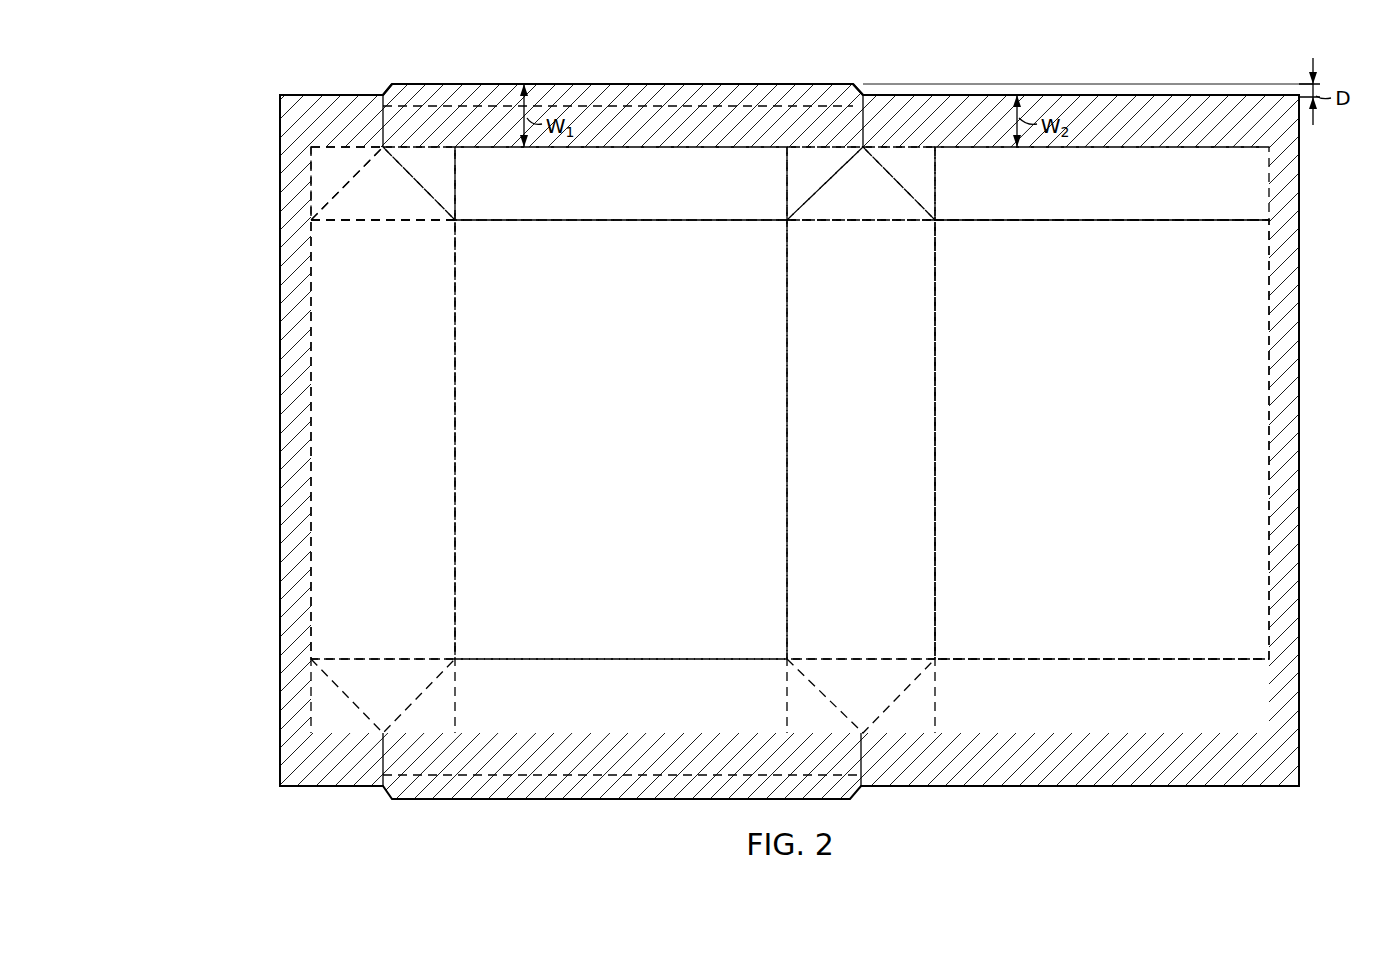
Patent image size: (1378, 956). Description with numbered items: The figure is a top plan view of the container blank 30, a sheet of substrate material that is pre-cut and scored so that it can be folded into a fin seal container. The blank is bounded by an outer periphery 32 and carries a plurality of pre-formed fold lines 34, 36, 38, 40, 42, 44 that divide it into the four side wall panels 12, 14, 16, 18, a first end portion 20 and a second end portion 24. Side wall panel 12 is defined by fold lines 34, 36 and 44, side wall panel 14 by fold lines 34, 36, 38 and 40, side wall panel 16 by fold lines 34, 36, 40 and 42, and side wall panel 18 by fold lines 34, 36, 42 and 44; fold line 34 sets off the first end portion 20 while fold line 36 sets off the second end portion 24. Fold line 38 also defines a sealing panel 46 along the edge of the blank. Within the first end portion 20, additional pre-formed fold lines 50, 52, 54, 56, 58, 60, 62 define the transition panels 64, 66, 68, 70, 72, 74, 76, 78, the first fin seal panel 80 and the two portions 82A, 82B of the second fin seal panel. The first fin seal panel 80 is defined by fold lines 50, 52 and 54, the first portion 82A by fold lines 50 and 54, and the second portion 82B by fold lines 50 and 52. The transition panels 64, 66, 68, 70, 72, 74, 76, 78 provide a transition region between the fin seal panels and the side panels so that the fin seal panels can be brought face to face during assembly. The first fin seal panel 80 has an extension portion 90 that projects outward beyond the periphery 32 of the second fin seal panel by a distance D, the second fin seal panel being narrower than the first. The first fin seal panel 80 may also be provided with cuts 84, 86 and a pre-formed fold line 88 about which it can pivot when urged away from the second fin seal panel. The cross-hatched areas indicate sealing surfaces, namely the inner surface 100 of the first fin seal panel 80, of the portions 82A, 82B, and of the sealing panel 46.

The container blank 30 is at (1213, 78).
The outer periphery 32 is at (1300, 186).
The sealing panel 46 is at (290, 434).
The first end portion 20 is at (240, 73).
The second end portion 24 is at (240, 655).
The pre-formed fold line 50 is at (693, 149).
The fold line 34 is at (697, 222).
The fold line 36 is at (697, 658).
The fold line 38 is at (313, 517).
The fold line 40 is at (457, 517).
The fold line 42 is at (789, 517).
The fold line 44 is at (937, 517).
The pre-formed fold line 88 is at (696, 105).
The pre-formed fold line 56 is at (352, 177).
The pre-formed fold line 58 is at (412, 177).
The pre-formed fold line 60 is at (831, 177).
The pre-formed fold line 62 is at (892, 177).
The transition panel 66 is at (383, 222).
The transition panel 74 is at (858, 222).
The transition panel 64 is at (347, 183).
The transition panel 68 is at (419, 183).
The transition panel 72 is at (825, 183).
The transition panel 76 is at (899, 183).
The transition panel 70 is at (621, 183).
The transition panel 78 is at (1102, 183).
The side wall panel 14 is at (383, 439).
The side wall panel 16 is at (621, 439).
The side wall panel 18 is at (861, 439).
The side wall panel 12 is at (1102, 439).
The inner surface 100 is at (1102, 439).
The cut 84 is at (384, 100).
The cut 86 is at (868, 100).
The pre-formed fold line 54 is at (380, 125).
The pre-formed fold line 52 is at (871, 120).
The extension portion 90 is at (742, 83).
The first fin seal panel 80 is at (621, 117).
The first portion of the second fin seal panel 82A is at (331, 112).
The second portion of the second fin seal panel 82B is at (1102, 115).